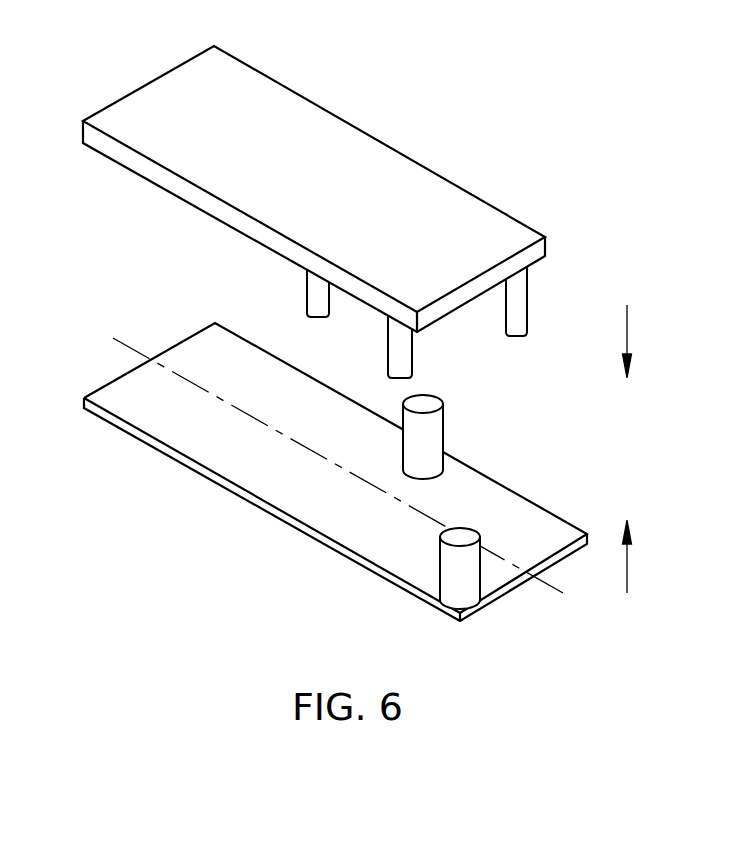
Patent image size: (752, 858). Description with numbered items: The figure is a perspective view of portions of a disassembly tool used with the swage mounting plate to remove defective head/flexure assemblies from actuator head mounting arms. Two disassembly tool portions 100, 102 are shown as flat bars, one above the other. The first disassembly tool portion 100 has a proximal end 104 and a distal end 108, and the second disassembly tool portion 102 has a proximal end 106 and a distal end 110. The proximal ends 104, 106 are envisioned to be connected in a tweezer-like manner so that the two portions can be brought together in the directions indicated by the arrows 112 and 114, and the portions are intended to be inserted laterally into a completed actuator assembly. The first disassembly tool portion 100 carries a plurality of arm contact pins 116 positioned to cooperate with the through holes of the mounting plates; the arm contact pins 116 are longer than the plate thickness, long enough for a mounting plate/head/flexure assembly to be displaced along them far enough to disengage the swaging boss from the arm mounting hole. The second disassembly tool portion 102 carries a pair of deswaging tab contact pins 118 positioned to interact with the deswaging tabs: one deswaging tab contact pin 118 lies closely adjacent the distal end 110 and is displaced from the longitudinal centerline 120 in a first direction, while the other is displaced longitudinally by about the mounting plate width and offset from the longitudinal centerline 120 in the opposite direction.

The first disassembly tool portion 100 is at (327, 209).
The second disassembly tool portion 102 is at (359, 475).
The proximal end 104 is at (142, 113).
The proximal end 106 is at (187, 352).
The distal end 108 is at (493, 230).
The distal end 110 is at (522, 522).
The arrow 112 is at (654, 341).
The arrow 114 is at (653, 556).
The arm contact pins 116 is at (515, 295).
The deswaging tab contact pins 118 is at (466, 575).
The longitudinal centerline 120 is at (410, 503).